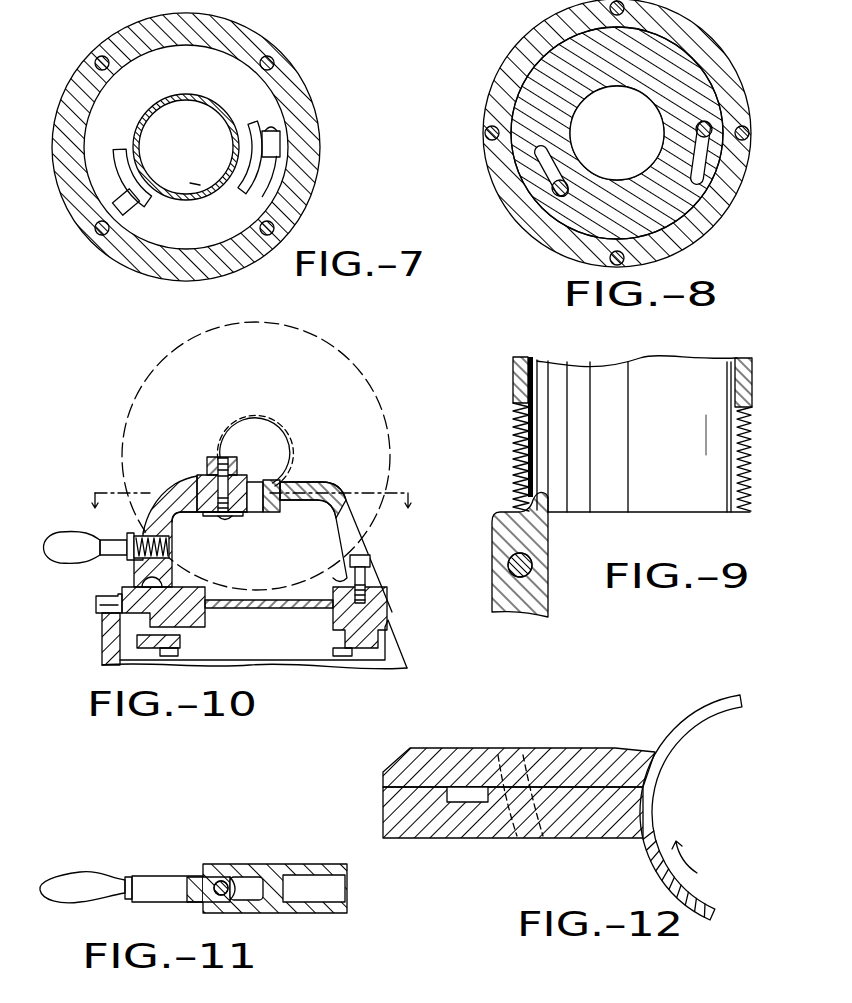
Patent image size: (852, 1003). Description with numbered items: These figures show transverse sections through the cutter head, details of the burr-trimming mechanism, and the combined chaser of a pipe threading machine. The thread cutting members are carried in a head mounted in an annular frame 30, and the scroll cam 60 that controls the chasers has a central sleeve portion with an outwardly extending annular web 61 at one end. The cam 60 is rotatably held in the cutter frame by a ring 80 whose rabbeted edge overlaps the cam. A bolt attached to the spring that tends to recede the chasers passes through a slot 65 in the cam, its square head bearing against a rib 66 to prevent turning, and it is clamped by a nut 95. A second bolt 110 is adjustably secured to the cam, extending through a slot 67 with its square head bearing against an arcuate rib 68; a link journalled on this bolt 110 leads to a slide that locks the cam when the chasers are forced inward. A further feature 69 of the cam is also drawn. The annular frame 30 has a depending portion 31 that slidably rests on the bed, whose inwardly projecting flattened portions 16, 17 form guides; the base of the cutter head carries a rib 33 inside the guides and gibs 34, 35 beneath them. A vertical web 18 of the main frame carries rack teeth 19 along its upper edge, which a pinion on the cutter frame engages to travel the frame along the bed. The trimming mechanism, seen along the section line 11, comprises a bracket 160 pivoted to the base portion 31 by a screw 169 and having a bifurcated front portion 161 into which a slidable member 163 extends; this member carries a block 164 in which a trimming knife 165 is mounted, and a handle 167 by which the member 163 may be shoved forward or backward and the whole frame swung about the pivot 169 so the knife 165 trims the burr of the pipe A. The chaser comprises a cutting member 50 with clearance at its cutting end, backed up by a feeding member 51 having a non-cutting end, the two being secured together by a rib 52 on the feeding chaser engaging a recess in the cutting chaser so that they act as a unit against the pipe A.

In FIG. 7, the annular frame 30 is at (304, 91).
In FIG. 10, the annular frame 30 is at (388, 410).
In FIG. 7, the scroll cam 60 is at (207, 96).
In FIG. 8, the scroll cam 60 is at (623, 176).
In FIG. 8, the annular web 61 is at (634, 88).
In FIG. 7, the slot 65 is at (112, 152).
In FIG. 8, the slot 65 is at (546, 176).
In FIG. 7, the rib 66 is at (139, 151).
In FIG. 7, the slot 67 is at (272, 120).
In FIG. 8, the slot 67 is at (703, 171).
In FIG. 7, the arcuate rib 68 is at (230, 145).
In FIG. 7, the ring edge 69 is at (200, 185).
In FIG. 7, the nut 95 is at (140, 206).
In FIG. 8, the nut 95 is at (556, 196).
In FIG. 7, the bolt 110 is at (280, 147).
In FIG. 8, the bolt 110 is at (712, 128).
In FIG. 8, the ring 80 is at (723, 62).
In FIG. 9, the rotor drum A is at (513, 381).
In FIG. 10, the rotor drum A is at (296, 430).
In FIG. 12, the rotor drum A is at (645, 797).
In FIG. 9, the trimming knife 165 is at (537, 527).
In FIG. 10, the trimming knife 165 is at (222, 454).
In FIG. 10, the section line 11 is at (250, 509).
In FIG. 10, the slidable member 163 is at (168, 492).
In FIG. 11, the slidable member 163 is at (121, 877).
In FIG. 10, the handle 167 is at (75, 558).
In FIG. 10, the block 164 is at (199, 470).
In FIG. 10, the bracket 160 is at (331, 486).
In FIG. 11, the bracket 160 is at (320, 855).
In FIG. 11, the bifurcated front portion 161 is at (238, 868).
In FIG. 10, the screw 169 is at (370, 570).
In FIG. 10, the depending portion 31 is at (264, 606).
In FIG. 10, the rib 33 is at (205, 627).
In FIG. 10, the gib 34 is at (180, 644).
In FIG. 10, the gib 35 is at (333, 645).
In FIG. 10, the flattened portion 16 is at (158, 656).
In FIG. 10, the flattened portion 17 is at (344, 656).
In FIG. 10, the vertical web 18 is at (102, 653).
In FIG. 10, the rack teeth 19 is at (100, 613).
In FIG. 12, the cutting member 50 is at (499, 832).
In FIG. 12, the feeding member 51 is at (458, 758).
In FIG. 12, the rib 52 is at (471, 792).